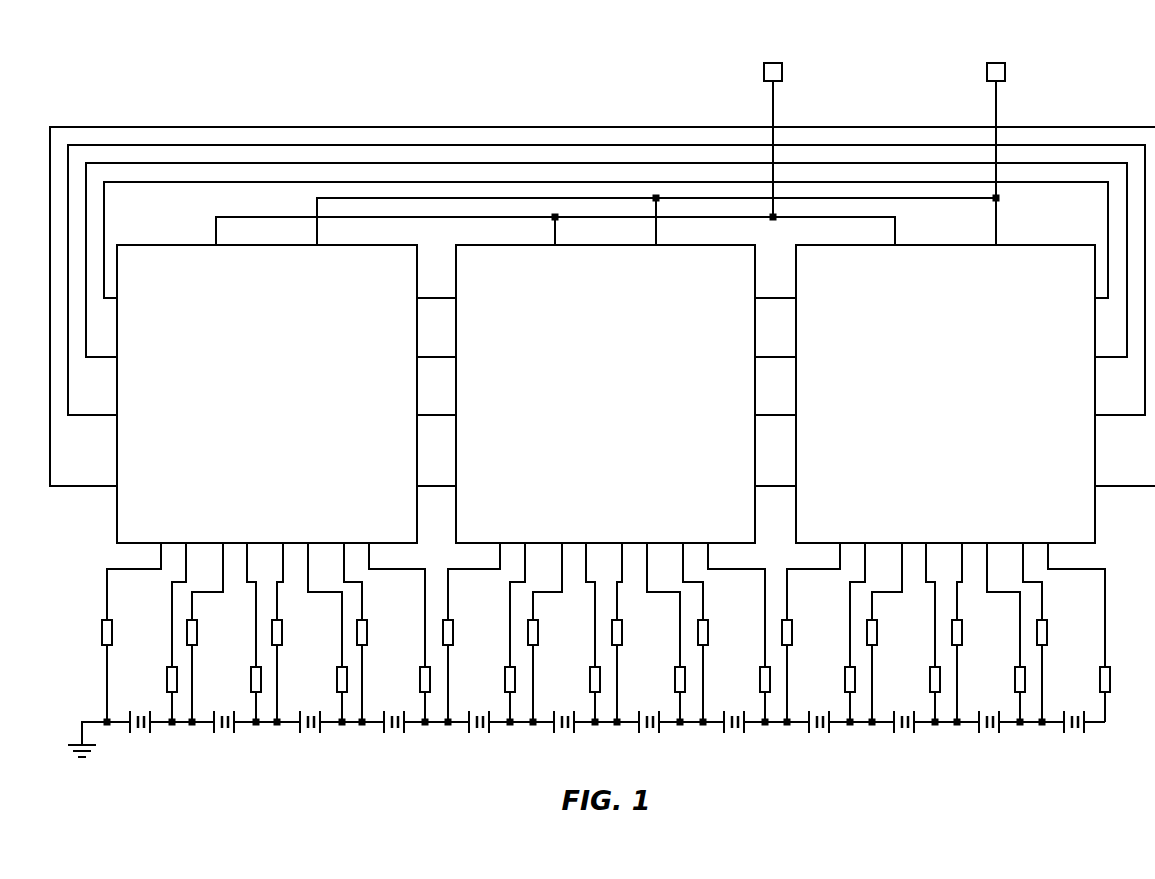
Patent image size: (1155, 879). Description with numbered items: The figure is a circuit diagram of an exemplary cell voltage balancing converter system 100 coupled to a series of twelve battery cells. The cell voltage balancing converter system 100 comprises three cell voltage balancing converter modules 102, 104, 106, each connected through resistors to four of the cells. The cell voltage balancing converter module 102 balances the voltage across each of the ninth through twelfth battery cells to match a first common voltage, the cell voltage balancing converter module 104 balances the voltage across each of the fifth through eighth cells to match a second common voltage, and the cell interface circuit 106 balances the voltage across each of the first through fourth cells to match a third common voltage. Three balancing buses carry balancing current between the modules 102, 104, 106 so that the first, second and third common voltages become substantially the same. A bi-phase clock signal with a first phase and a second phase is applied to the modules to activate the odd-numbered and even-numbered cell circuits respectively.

The cell voltage balancing converter system 100 is at (276, 56).
The cell voltage balancing converter module 102 is at (267, 394).
The cell voltage balancing converter module 104 is at (605, 394).
The cell voltage balancing converter module 106 is at (945, 394).